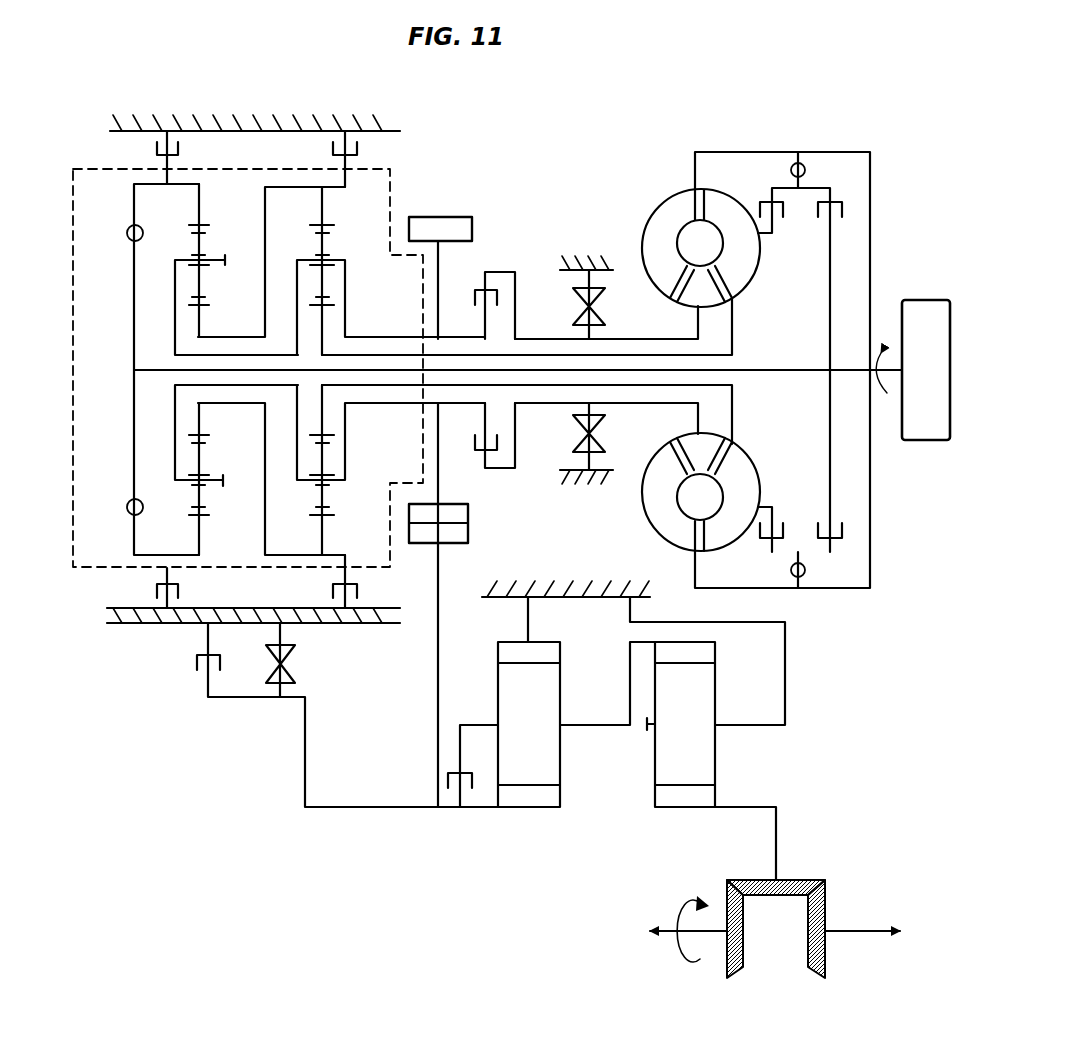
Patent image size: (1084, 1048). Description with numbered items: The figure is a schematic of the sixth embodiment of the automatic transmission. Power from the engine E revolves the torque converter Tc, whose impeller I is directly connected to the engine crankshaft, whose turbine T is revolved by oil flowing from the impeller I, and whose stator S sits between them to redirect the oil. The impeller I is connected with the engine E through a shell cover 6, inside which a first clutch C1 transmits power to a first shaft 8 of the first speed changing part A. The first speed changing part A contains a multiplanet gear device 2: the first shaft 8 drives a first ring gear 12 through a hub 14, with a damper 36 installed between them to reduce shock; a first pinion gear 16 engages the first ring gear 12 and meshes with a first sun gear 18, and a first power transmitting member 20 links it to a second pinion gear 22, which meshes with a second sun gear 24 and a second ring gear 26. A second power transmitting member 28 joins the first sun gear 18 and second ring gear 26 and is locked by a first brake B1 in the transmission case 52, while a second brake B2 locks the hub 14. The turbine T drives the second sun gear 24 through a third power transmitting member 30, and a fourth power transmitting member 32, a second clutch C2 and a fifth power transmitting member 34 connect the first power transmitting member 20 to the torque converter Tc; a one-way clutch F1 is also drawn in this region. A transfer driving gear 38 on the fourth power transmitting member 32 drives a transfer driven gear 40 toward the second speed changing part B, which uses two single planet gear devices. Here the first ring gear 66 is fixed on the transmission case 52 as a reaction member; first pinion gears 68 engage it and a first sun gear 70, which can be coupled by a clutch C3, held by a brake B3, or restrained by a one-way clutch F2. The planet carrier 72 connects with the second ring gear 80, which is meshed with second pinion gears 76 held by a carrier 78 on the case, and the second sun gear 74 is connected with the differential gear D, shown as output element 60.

The multiplanet gear device 2 is at (89, 169).
The shell cover 6 is at (782, 151).
The first shaft 8 is at (780, 366).
The first ring gear 12 is at (195, 222).
The hub 14 is at (134, 301).
The first pinion gear 16 is at (210, 292).
The first sun gear 18 is at (210, 310).
The first power transmitting member 20 is at (168, 368).
The second pinion gear 22 is at (332, 234).
The second sun gear 24 is at (330, 306).
The second ring gear 26 is at (318, 221).
The second power transmitting member 28 is at (265, 210).
The third power transmitting member 30 is at (728, 358).
The fourth power transmitting member 32 is at (348, 280).
The fifth power transmitting member 34 is at (547, 338).
The damper 36 is at (127, 233).
The transfer driving gear 38 is at (469, 231).
The transfer driven gear 40 is at (468, 537).
The transmission case 52 is at (262, 118).
The differential gear unit 60 is at (869, 928).
The first ring gear 66 is at (497, 649).
The first pinion gears 68 is at (545, 760).
The first sun gear 70 is at (524, 809).
The planet carrier 72 is at (629, 673).
The second sun gear 74 is at (687, 809).
The second pinion gears 76 is at (718, 692).
The carrier 78 is at (628, 614).
The second ring gear 80 is at (718, 650).
The first brake B1 is at (363, 369).
The second brake B2 is at (186, 369).
The brake B3 is at (327, 715).
The first clutch C1 is at (814, 370).
The second clutch C2 is at (485, 364).
The clutch C3 is at (473, 766).
The first one-way clutch F1 is at (596, 370).
The one-way clutch F2 is at (297, 660).
The torque converter Tc is at (716, 319).
The impeller I is at (658, 223).
The turbine T is at (752, 255).
The stator S is at (688, 296).
The engine E is at (913, 370).
The first speed changing part A is at (412, 200).
The second speed changing part B is at (490, 820).
The differential gear D is at (685, 976).